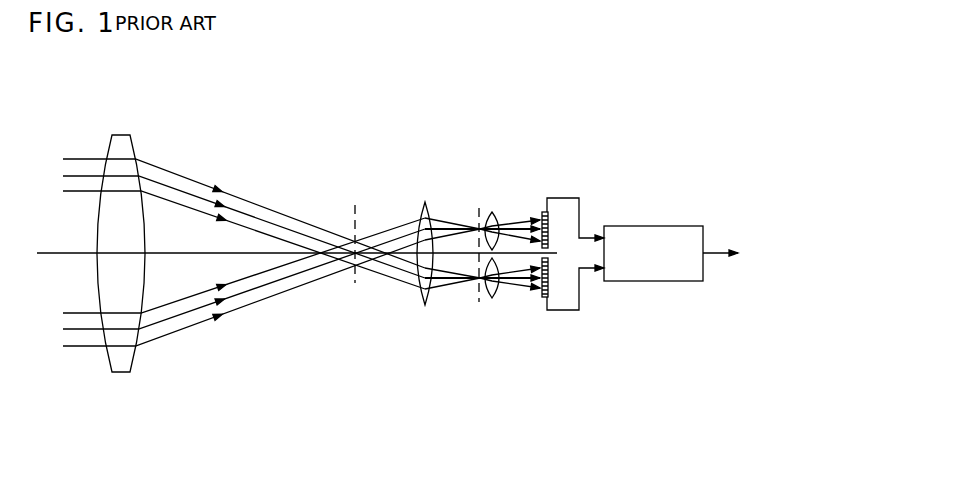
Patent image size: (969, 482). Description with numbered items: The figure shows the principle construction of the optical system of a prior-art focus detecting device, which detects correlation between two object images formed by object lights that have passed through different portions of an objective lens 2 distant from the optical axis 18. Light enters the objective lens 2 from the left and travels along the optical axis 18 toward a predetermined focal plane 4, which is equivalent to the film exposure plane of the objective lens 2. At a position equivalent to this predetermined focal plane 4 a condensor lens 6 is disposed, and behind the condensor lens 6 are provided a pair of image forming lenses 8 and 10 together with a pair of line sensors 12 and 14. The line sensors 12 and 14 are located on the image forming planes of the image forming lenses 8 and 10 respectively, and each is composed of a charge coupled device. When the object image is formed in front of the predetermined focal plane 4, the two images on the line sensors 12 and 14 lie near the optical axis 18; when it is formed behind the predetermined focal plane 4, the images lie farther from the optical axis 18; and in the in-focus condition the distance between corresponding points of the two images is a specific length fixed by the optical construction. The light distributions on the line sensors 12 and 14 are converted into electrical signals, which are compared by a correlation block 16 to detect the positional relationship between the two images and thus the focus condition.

The objective lens 2 is at (117, 373).
The predetermined focal plane 4 is at (353, 288).
The condensor lens 6 is at (424, 307).
The image forming lens 8 is at (493, 209).
The image forming lens 10 is at (493, 303).
The line sensor 12 is at (548, 213).
The line sensor 14 is at (550, 284).
The correlation circuit 16 is at (655, 226).
The optical axis 18 is at (47, 254).